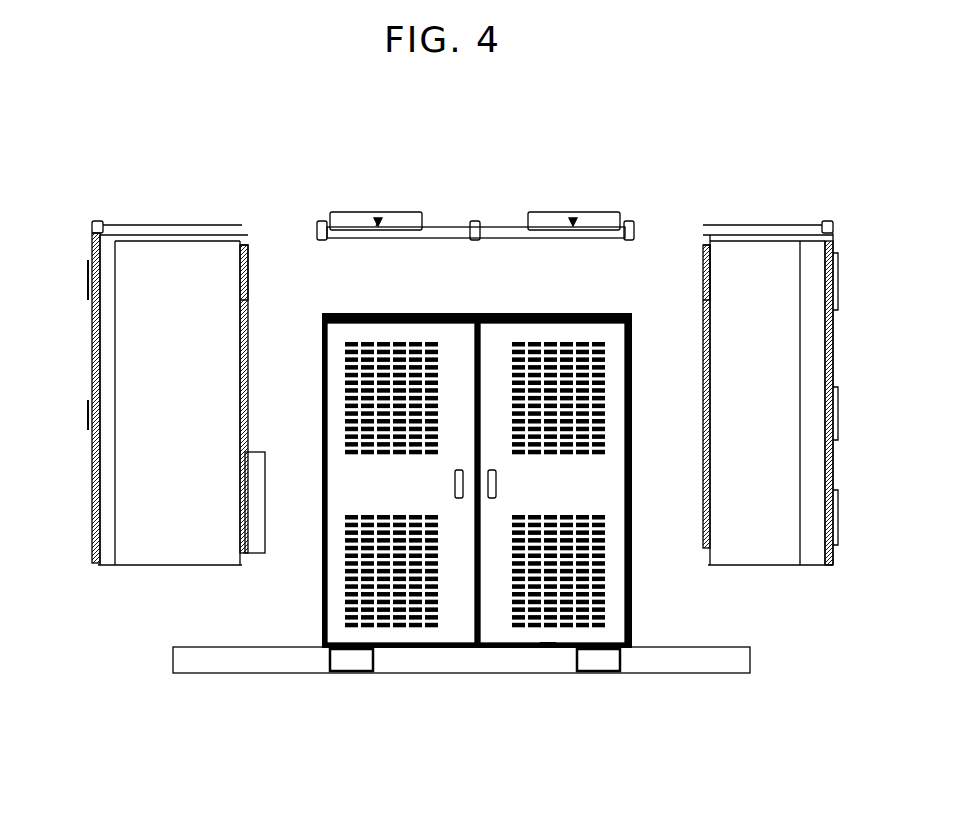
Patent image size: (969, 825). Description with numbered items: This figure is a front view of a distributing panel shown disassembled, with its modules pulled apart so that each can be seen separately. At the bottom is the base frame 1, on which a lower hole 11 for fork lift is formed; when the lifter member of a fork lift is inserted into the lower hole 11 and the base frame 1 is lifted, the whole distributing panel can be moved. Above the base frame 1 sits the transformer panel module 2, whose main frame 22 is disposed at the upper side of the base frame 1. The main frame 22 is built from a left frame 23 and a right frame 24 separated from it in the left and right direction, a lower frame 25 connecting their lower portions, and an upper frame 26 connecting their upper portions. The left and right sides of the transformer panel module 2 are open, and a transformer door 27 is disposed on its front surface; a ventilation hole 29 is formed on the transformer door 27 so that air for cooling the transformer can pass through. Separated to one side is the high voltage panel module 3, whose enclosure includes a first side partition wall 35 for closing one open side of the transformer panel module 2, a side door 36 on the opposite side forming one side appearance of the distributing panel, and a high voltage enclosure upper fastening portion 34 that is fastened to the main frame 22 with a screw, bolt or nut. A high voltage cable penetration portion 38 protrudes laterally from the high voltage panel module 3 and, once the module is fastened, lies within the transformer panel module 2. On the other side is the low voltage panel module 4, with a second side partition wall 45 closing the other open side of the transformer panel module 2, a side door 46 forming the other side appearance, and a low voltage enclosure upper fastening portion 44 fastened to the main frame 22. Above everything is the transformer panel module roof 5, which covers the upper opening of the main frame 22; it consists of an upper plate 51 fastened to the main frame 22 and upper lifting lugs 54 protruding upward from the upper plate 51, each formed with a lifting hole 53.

The base frame 1 is at (461, 686).
The lower hole for fork lift 11 is at (598, 662).
The transformer panel module 2 is at (483, 492).
The main frame 22 is at (628, 313).
The left frame 23 is at (632, 498).
The right frame 24 is at (320, 612).
The lower frame 25 is at (418, 650).
The upper frame 26 is at (473, 313).
The transformer door 27 is at (454, 635).
The ventilation hole 29 is at (548, 634).
The high voltage panel module 3 is at (168, 444).
The high voltage enclosure upper fastening portion 34 is at (250, 320).
The first side partition wall 35 is at (248, 292).
The side door 36 is at (92, 447).
The high voltage cable penetration portion 38 is at (255, 452).
The low voltage panel module 4 is at (769, 434).
The low voltage enclosure upper fastening portion 44 is at (706, 397).
The second side partition wall 45 is at (707, 319).
The side door 46 is at (835, 452).
The transformer panel module roof 5 is at (475, 195).
The upper plate 51 is at (445, 236).
The lifting hole 53 is at (378, 220).
The upper lifting lug 54 is at (400, 216).